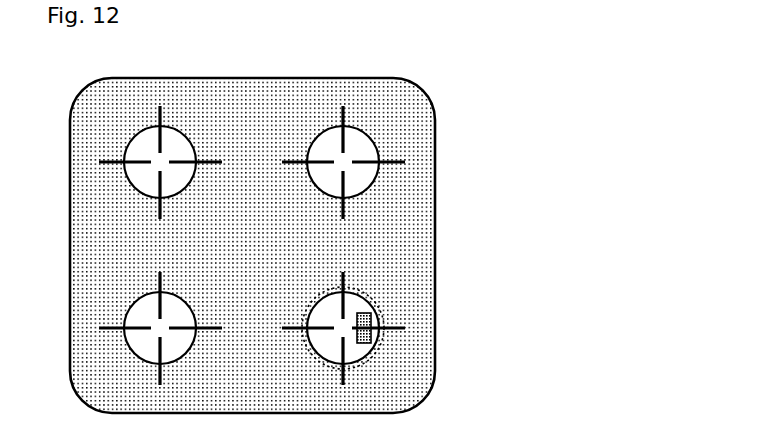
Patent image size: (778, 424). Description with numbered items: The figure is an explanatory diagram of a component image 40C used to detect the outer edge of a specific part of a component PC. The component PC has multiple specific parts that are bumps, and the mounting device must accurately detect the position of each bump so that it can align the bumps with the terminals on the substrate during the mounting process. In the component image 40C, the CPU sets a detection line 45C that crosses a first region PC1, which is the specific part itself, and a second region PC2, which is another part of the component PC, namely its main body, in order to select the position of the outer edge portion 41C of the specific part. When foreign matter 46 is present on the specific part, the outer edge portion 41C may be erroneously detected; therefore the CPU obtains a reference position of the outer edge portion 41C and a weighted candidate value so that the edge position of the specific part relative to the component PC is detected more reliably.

The component image 40C is at (345, 221).
The component PC is at (307, 228).
The first region PC1 is at (372, 141).
The second region PC2 is at (330, 248).
The detection line 45C is at (380, 163).
The foreign matter 46 is at (366, 318).
The outer edge portion 41C is at (381, 348).